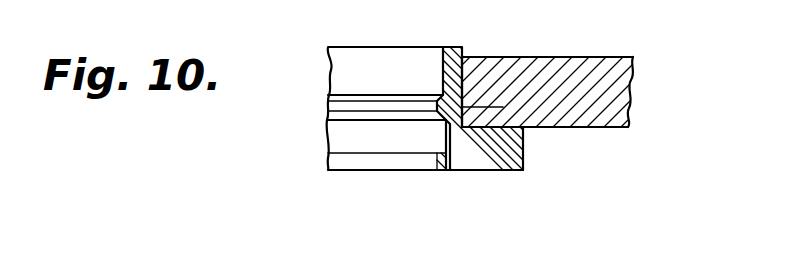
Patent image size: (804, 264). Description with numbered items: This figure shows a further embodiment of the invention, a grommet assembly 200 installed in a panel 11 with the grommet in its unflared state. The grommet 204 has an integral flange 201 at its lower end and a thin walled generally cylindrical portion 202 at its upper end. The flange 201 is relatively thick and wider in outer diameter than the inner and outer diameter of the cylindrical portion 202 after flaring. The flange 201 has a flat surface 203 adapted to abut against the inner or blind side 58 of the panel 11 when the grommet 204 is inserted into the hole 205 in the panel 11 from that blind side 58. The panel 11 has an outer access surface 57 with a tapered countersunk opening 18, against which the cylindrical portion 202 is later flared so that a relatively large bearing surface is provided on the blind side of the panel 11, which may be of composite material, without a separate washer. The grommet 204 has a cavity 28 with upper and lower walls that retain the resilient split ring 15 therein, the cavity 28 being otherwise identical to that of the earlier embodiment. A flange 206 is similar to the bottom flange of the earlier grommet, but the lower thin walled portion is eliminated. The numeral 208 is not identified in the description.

The grommet assembly 200 is at (320, 62).
The grommet 204 is at (440, 73).
The thin walled generally cylindrical portion 202 is at (455, 47).
The tapered countersunk opening 18 is at (488, 56).
The outer access surface 57 is at (603, 57).
The panel 11 is at (625, 85).
The hole 205 is at (503, 107).
The inner or blind side 58 is at (615, 127).
The flat surface 203 is at (545, 128).
The integral flange 201 is at (498, 160).
The seal element 208 is at (448, 170).
The flange 206 is at (432, 160).
The cavity 28 is at (447, 135).
The ring 15 is at (338, 137).